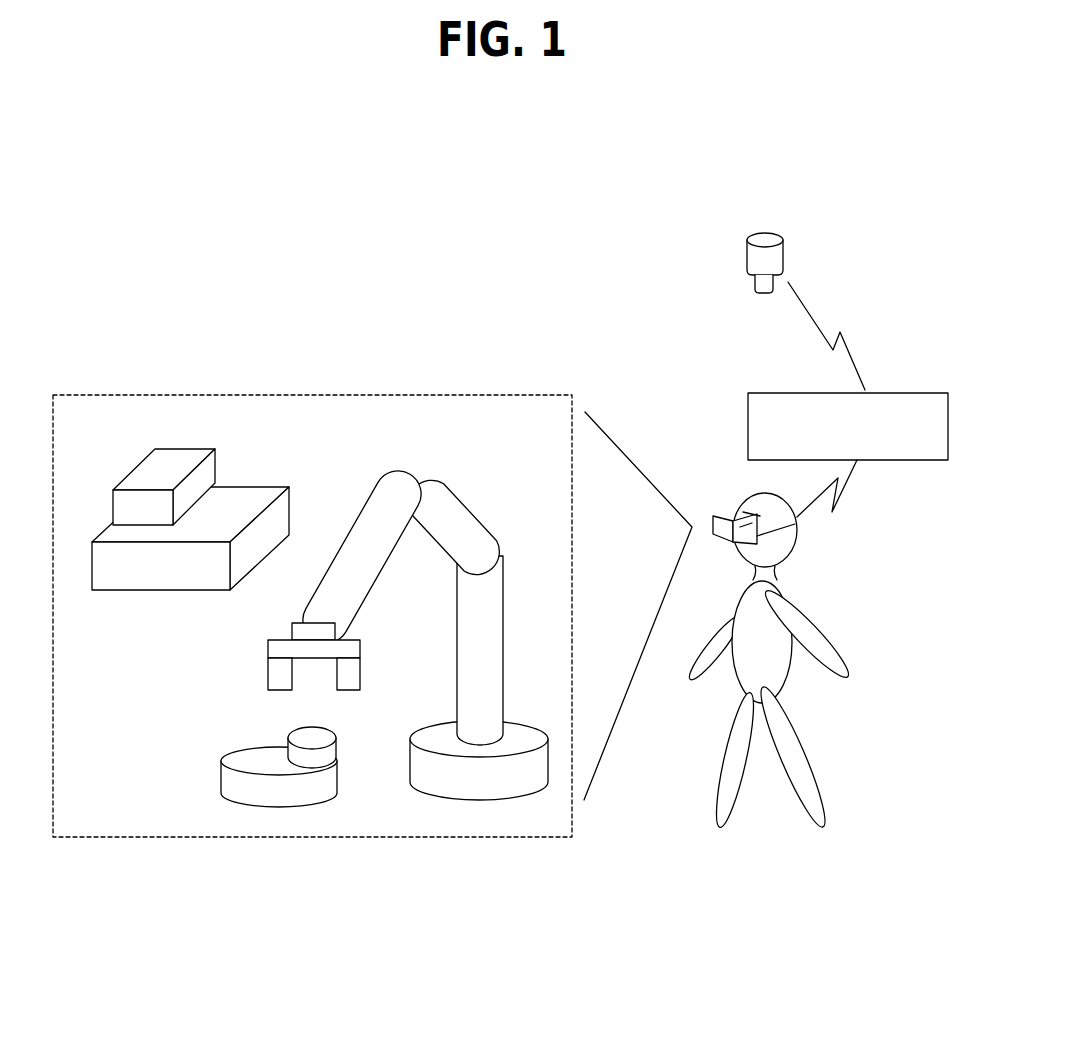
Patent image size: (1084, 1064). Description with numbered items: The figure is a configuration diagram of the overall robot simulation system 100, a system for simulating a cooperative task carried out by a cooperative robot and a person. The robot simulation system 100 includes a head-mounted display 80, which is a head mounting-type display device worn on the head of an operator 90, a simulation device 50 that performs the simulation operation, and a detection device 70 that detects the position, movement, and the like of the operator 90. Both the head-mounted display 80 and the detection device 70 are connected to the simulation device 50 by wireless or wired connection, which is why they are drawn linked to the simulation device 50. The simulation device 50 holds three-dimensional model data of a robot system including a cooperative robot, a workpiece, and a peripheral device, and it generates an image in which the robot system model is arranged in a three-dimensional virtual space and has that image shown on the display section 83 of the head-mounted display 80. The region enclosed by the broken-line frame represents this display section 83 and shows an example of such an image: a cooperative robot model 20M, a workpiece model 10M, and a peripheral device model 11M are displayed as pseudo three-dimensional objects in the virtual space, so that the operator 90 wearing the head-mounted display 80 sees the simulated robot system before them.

The robot simulation system 100 is at (513, 262).
The display section 83 is at (425, 396).
The peripheral device model 11M is at (185, 593).
The cooperative robot model 20M is at (480, 503).
The workpiece model 10M is at (300, 808).
The detection device 70 is at (768, 233).
The simulation device 50 is at (902, 390).
The head-mounted display 80 is at (813, 531).
The operator 90 is at (793, 673).